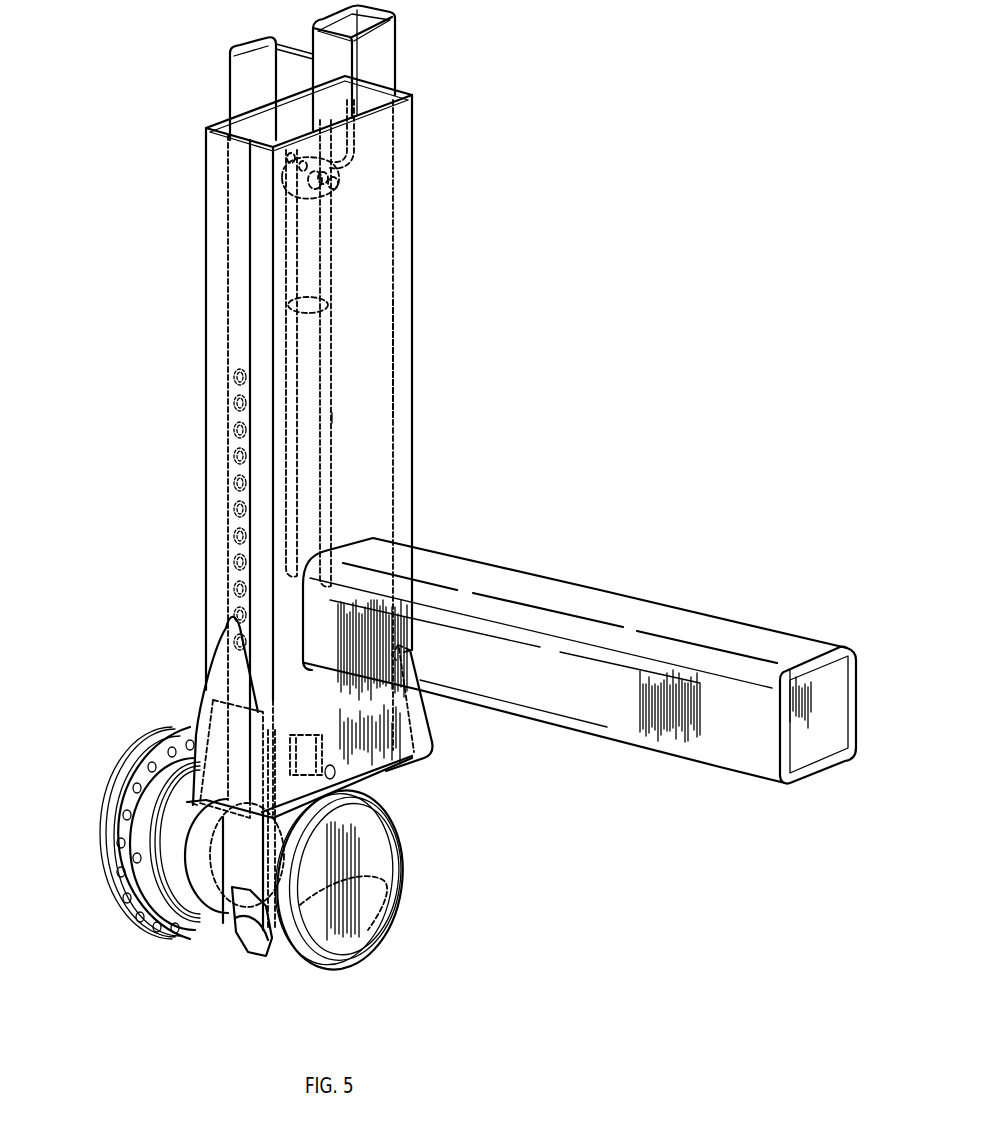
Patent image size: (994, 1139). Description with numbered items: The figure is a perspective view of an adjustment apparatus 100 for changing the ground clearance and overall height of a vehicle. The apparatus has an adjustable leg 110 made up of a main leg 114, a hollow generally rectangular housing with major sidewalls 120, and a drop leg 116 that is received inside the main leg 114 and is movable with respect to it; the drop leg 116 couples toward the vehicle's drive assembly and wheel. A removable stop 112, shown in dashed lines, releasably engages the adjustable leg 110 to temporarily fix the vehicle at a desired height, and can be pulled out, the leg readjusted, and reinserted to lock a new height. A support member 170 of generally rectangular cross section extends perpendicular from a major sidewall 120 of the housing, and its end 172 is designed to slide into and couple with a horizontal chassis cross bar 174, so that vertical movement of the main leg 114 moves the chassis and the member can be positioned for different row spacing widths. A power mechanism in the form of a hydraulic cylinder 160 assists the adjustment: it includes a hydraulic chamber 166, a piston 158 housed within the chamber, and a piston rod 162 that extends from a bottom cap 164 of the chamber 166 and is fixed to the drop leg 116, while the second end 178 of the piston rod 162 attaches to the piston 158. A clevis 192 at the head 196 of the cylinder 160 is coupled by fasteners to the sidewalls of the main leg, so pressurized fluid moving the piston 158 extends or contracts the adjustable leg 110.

The adjustment apparatus 100 is at (451, 491).
The adjustable leg 110 is at (413, 270).
The stop 112 is at (220, 735).
The main leg 114 is at (398, 370).
The drop leg 116 is at (385, 58).
The major sidewall 120 is at (135, 765).
The piston 158 is at (293, 200).
The hydraulic cylinder 160 is at (325, 452).
The piston rod 162 is at (295, 630).
The bottom cap 164 is at (293, 573).
The hydraulic chamber 166 is at (332, 417).
The support member 170 is at (603, 603).
The end 172 is at (810, 662).
The chassis cross bar 174 is at (378, 778).
The second end 178 is at (290, 180).
The clevis 192 is at (333, 152).
The head 196 is at (288, 158).